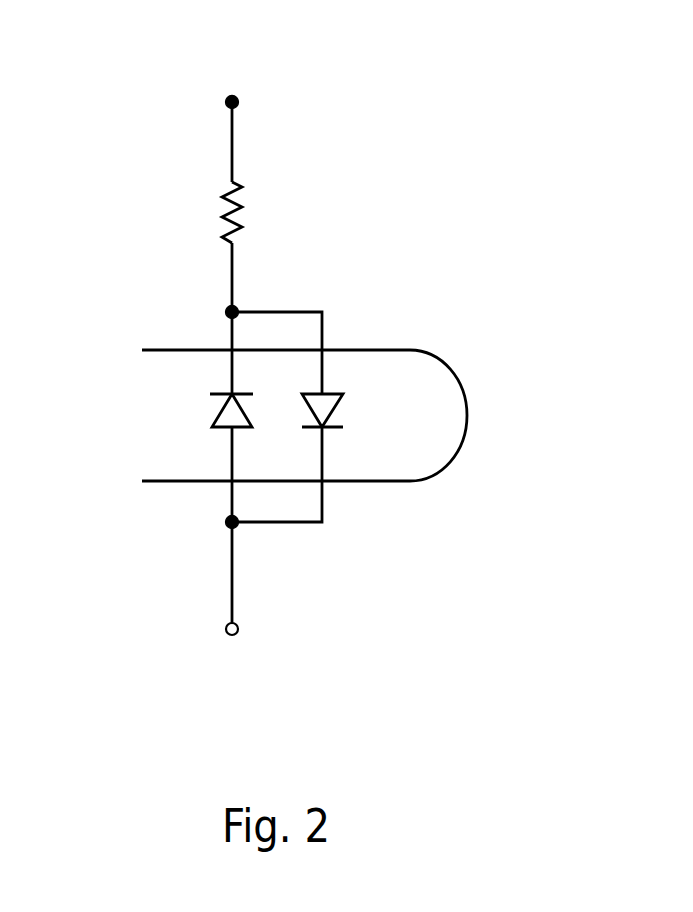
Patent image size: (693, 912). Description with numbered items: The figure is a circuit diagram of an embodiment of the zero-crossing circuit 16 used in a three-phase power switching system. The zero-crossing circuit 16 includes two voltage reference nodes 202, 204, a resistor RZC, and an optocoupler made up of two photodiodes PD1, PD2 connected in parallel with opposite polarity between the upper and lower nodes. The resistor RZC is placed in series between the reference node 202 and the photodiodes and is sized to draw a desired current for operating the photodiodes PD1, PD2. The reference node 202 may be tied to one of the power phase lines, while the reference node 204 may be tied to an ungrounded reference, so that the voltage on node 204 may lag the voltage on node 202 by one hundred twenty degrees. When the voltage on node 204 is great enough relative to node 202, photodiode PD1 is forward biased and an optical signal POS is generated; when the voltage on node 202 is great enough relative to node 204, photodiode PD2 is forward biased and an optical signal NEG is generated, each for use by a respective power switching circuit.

The zero-crossing circuit 16 is at (540, 76).
The voltage reference node 202 is at (237, 96).
The voltage reference node 204 is at (229, 637).
The resistor RZC is at (236, 218).
The photodiode PD1 is at (221, 405).
The photodiode PD2 is at (334, 403).
The optical signal POS is at (124, 320).
The optical signal NEG is at (428, 319).